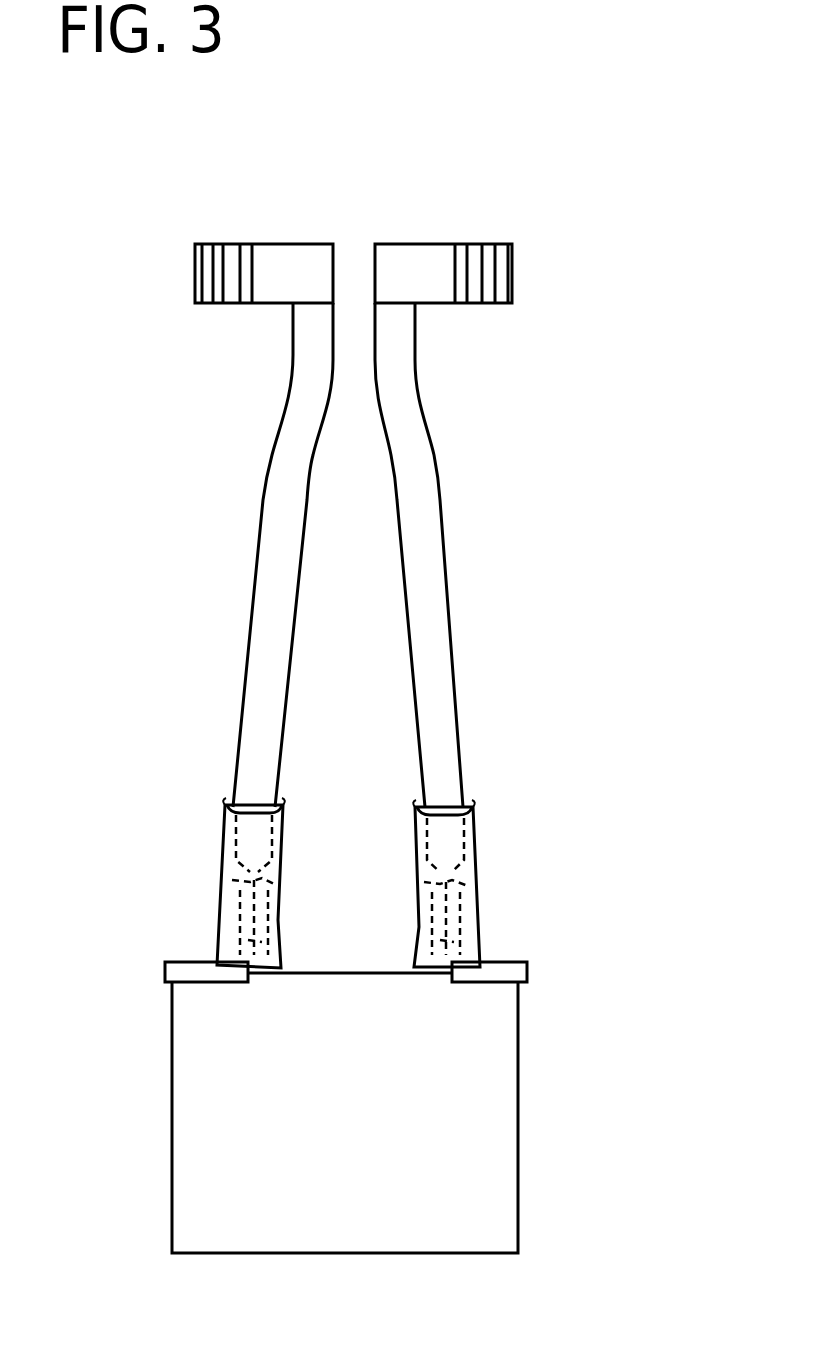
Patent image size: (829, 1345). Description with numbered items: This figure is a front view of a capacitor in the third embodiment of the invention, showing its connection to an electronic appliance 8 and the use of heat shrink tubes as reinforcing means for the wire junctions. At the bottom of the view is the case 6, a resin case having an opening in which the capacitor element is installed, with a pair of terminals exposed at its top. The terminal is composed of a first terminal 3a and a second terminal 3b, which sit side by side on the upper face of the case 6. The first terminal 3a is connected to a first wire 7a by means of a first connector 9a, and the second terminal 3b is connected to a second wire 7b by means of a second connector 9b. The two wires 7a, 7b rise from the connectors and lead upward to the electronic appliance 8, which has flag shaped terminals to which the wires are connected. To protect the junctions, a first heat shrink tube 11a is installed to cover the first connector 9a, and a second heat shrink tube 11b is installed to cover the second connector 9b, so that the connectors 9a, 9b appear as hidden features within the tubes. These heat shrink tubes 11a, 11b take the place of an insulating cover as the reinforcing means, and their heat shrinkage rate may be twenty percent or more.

The electronic appliance 8 is at (410, 260).
The first wire 7a is at (263, 632).
The second wire 7b is at (435, 590).
The first heat shrink tube 11a is at (230, 865).
The second heat shrink tube 11b is at (472, 848).
The first connector 9a is at (232, 917).
The second connector 9b is at (465, 922).
The first terminal 3a is at (212, 958).
The second terminal 3b is at (477, 958).
The case 6 is at (493, 1147).